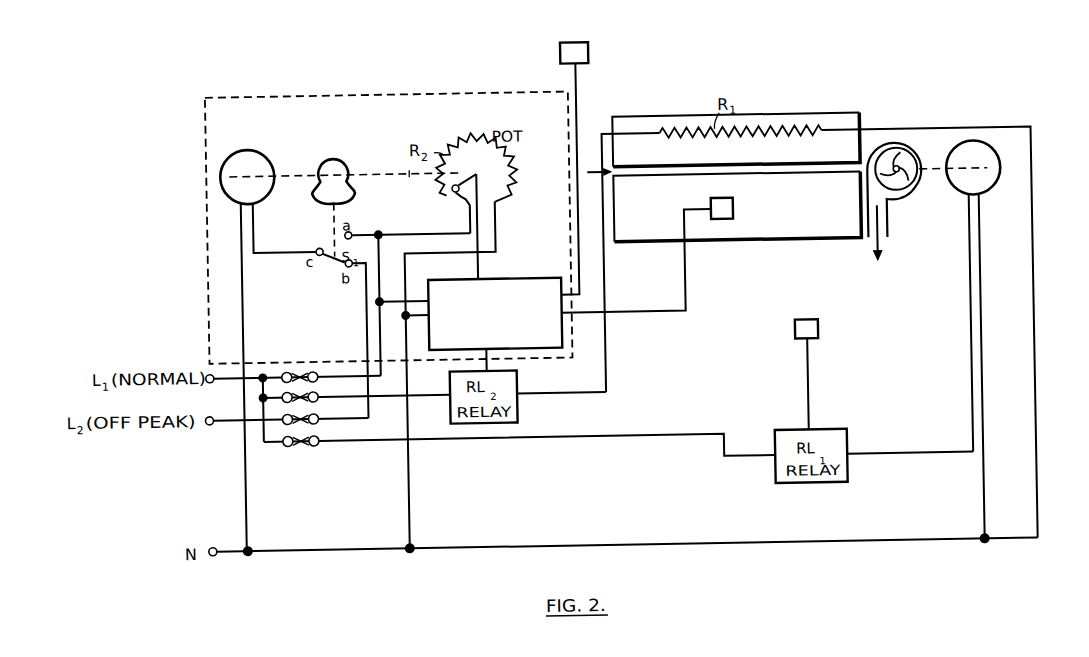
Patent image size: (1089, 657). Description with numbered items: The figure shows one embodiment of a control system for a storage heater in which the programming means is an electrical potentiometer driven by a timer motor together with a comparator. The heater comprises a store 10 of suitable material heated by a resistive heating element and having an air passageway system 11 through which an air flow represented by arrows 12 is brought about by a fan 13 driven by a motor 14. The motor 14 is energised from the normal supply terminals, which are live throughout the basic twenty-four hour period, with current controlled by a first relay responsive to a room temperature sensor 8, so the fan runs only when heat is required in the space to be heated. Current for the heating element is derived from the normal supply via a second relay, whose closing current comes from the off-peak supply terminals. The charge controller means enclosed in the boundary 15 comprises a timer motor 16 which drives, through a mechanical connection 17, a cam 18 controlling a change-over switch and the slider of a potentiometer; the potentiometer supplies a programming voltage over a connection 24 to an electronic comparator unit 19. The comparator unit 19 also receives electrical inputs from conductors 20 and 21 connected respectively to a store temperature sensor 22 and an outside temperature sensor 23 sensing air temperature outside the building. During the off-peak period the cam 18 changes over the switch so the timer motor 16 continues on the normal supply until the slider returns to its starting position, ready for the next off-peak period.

The room temperature sensor 8 is at (819, 341).
The store 10 is at (740, 162).
The air passageway system 11 is at (638, 131).
The air flow 12 is at (587, 168).
The fan 13 is at (912, 148).
The motor 14 is at (1001, 170).
The boundary 15 is at (223, 74).
The timer motor 16 is at (224, 168).
The mechanical connection 17 is at (412, 175).
The cam 18 is at (341, 168).
The electronic comparator unit 19 is at (511, 277).
The conductor 20 is at (653, 312).
The conductor 21 is at (581, 91).
The store temperature sensor 22 is at (713, 202).
The outside temperature sensor 23 is at (593, 52).
The connection from potentiometer 24 is at (479, 268).